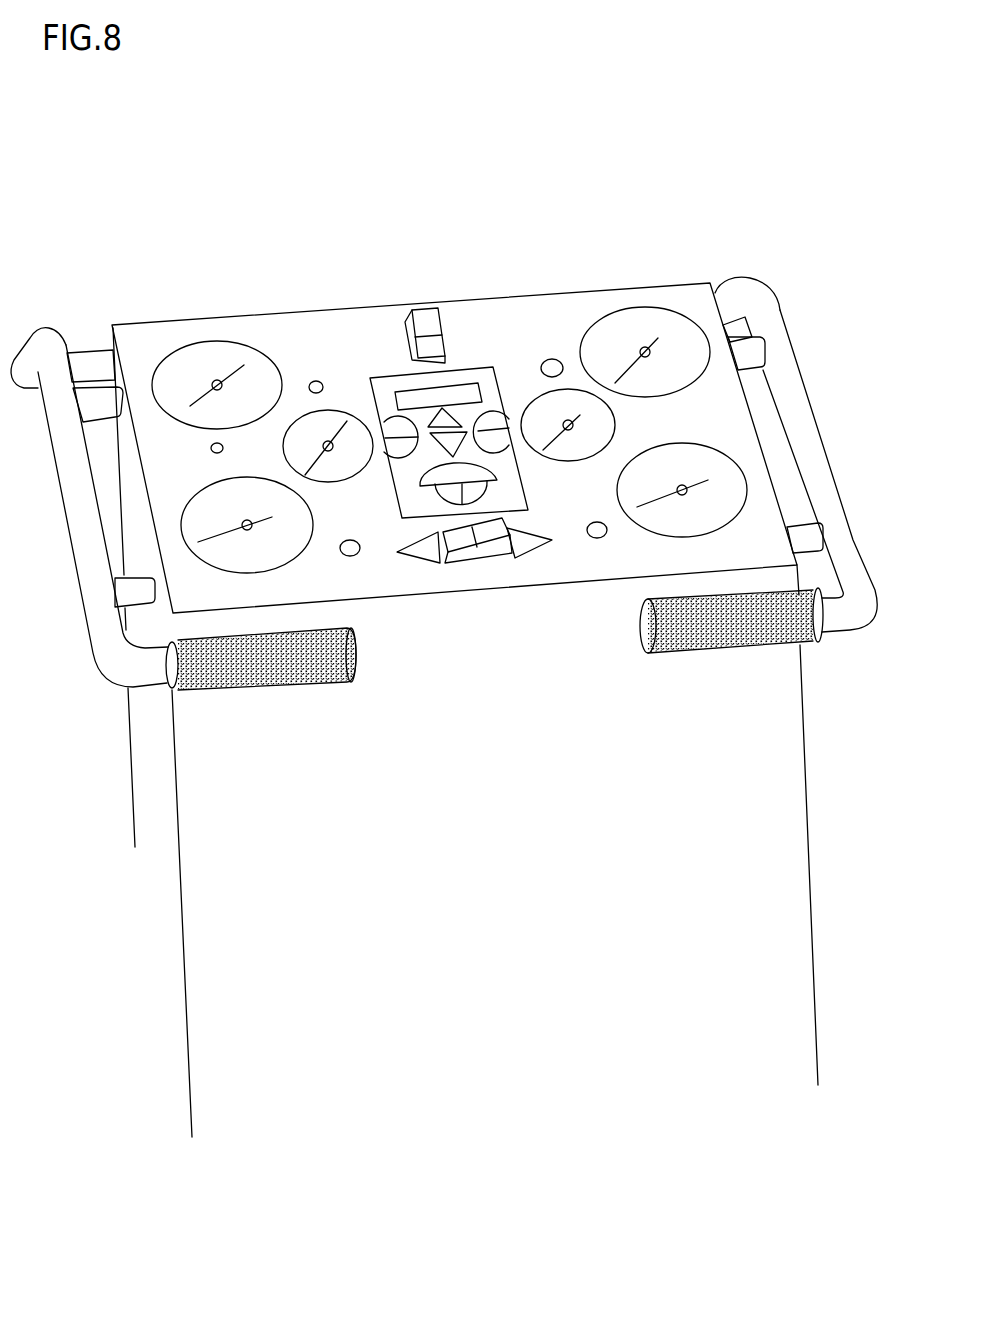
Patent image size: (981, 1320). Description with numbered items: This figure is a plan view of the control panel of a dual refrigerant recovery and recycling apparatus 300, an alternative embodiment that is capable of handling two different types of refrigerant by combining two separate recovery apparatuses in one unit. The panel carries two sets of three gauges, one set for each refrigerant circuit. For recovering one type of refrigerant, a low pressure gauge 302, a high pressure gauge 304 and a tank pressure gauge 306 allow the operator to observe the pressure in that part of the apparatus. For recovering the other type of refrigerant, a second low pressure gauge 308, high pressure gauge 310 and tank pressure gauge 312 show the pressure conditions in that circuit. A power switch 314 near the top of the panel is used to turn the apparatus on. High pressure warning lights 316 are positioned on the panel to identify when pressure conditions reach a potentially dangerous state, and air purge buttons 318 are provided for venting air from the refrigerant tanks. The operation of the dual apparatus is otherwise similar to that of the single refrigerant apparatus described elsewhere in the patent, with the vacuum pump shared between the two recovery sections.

The dual refrigerant recovery and recycling apparatus 300 is at (397, 242).
The low pressure gauge 302 is at (287, 563).
The high pressure gauge 304 is at (215, 340).
The tank pressure gauge 306 is at (347, 480).
The low pressure gauge 308 is at (688, 443).
The high pressure gauge 310 is at (647, 307).
The tank pressure gauge 312 is at (617, 430).
The power switch 314 is at (427, 320).
The high pressure warning lights 316 is at (316, 380).
The air purge buttons 318 is at (358, 553).